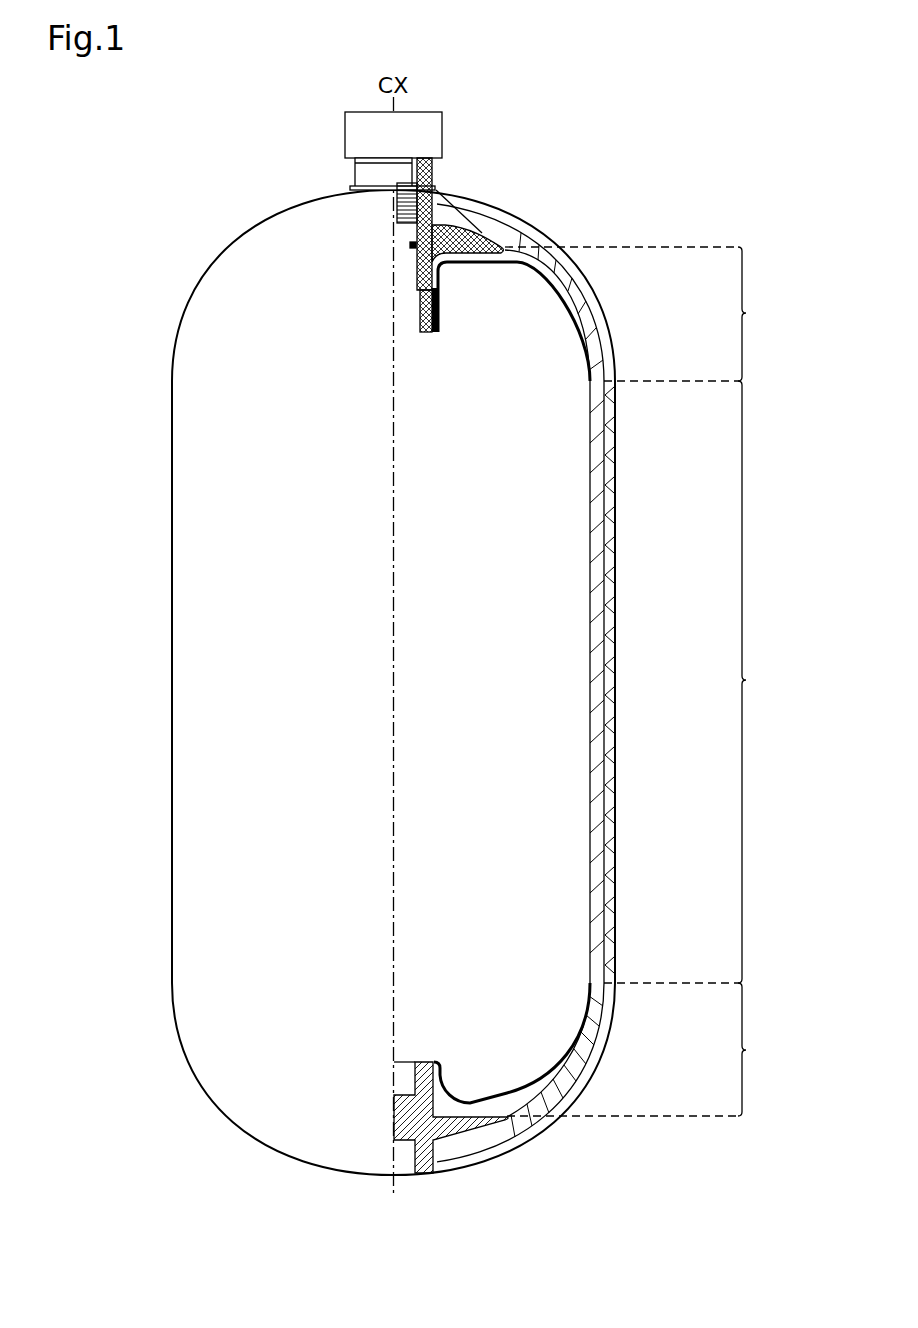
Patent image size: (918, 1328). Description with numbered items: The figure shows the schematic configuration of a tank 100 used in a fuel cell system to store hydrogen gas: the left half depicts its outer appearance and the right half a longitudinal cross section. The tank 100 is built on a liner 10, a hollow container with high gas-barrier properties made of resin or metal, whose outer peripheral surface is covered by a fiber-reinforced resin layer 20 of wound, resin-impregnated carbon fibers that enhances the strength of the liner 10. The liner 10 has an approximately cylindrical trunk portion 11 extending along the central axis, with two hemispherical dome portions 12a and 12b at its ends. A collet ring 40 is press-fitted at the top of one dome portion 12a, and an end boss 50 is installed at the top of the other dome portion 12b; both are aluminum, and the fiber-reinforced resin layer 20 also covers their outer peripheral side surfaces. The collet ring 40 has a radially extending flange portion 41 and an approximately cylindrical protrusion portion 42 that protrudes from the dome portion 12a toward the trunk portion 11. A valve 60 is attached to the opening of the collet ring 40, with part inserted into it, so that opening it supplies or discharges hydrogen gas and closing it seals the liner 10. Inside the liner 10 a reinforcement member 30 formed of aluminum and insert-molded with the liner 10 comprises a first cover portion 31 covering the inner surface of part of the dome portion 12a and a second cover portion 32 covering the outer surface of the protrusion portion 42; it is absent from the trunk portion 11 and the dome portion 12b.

The tank 100 is at (142, 133).
The liner 10 is at (598, 482).
The trunk portion 11 is at (695, 682).
The dome portion 12a is at (652, 314).
The dome portion 12b is at (653, 1049).
The fiber-reinforced resin layer 20 is at (275, 752).
The reinforcement member 30 is at (553, 153).
The first cover portion 31 is at (530, 260).
The second cover portion 32 is at (440, 318).
The collet ring 40 is at (487, 228).
The flange portion 41 is at (442, 231).
The protrusion portion 42 is at (412, 280).
The end boss 50 is at (432, 1173).
The valve 60 is at (345, 133).